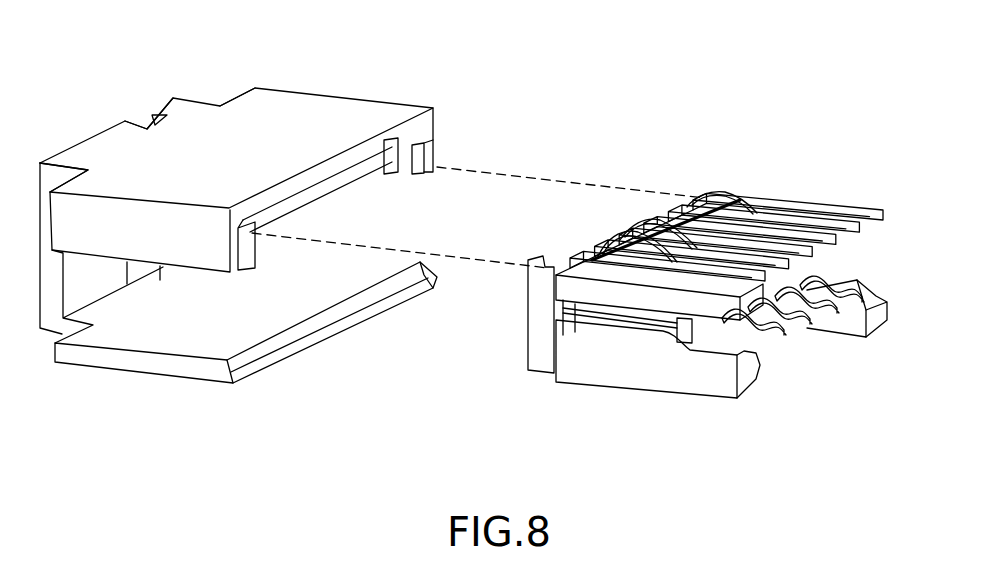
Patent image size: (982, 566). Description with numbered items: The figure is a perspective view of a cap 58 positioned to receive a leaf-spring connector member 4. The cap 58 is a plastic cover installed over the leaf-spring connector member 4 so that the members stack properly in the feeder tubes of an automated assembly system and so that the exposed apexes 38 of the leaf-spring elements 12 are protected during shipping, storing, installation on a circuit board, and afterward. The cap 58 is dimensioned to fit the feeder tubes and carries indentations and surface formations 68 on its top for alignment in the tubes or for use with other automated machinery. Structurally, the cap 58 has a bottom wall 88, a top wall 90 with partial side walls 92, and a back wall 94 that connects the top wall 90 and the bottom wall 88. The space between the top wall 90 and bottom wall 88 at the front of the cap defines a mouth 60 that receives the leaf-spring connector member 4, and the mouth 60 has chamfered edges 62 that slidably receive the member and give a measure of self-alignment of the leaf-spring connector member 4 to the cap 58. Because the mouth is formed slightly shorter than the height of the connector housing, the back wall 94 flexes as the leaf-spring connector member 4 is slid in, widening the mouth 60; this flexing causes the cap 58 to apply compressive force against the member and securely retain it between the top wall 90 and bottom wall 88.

The leaf-spring connector member 4 is at (660, 412).
The leaf-spring elements 12 is at (747, 208).
The apexes 38 is at (742, 200).
The cap 58 is at (200, 420).
The mouth 60 is at (413, 205).
The chamfered edges 62 is at (260, 227).
The indentations and surface formations 68 is at (58, 173).
The bottom wall 88 is at (273, 363).
The top wall 90 is at (275, 95).
The partial side walls 92 is at (87, 240).
The back wall 94 is at (52, 307).